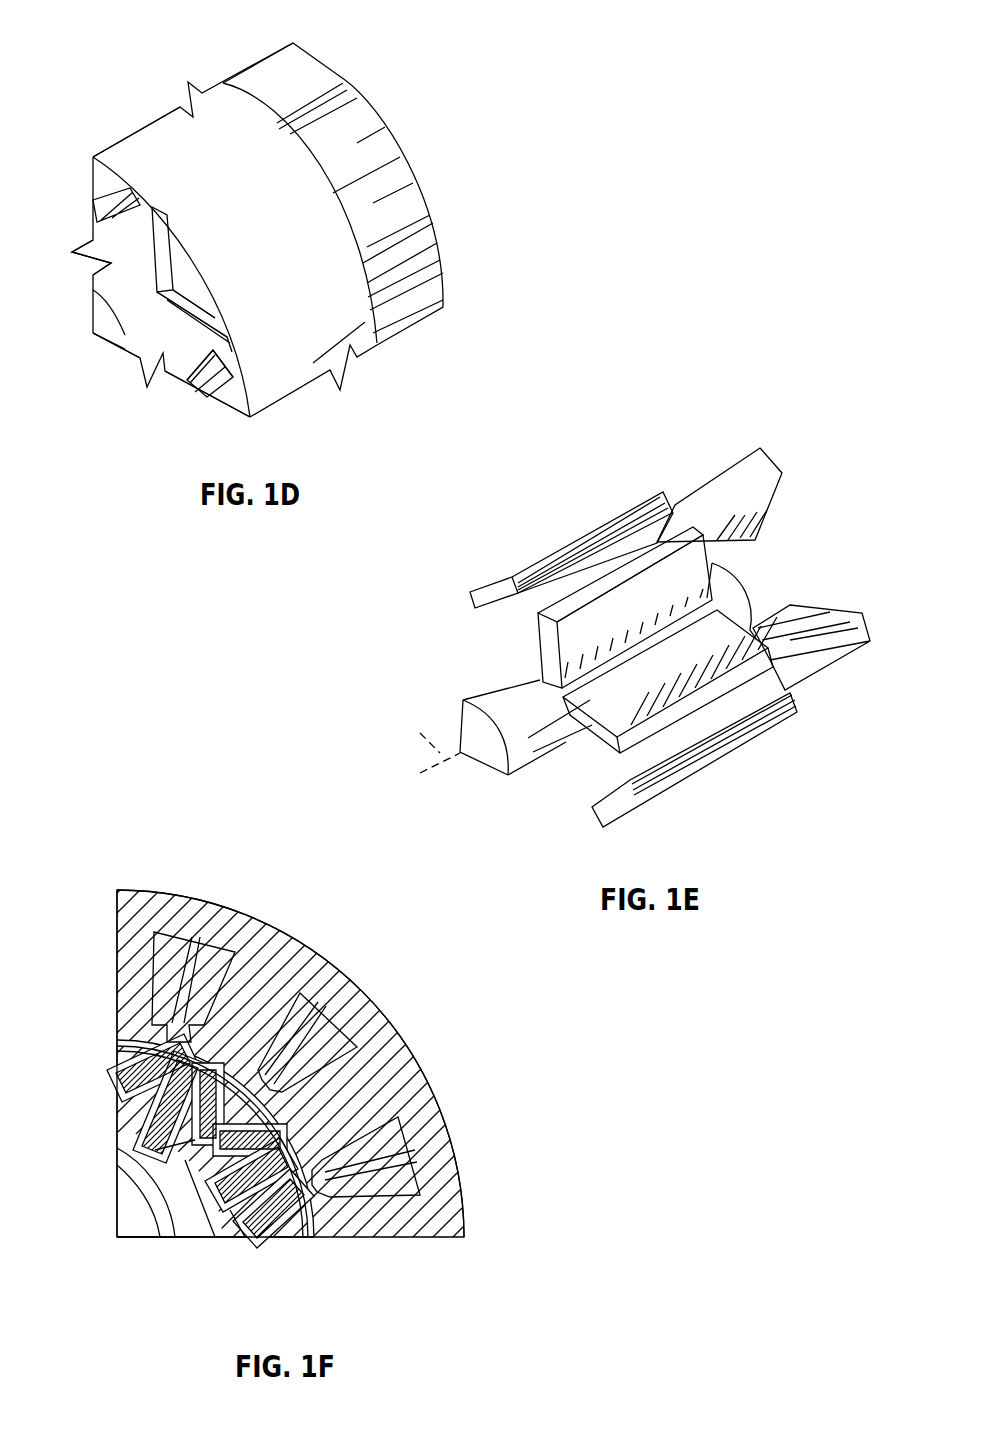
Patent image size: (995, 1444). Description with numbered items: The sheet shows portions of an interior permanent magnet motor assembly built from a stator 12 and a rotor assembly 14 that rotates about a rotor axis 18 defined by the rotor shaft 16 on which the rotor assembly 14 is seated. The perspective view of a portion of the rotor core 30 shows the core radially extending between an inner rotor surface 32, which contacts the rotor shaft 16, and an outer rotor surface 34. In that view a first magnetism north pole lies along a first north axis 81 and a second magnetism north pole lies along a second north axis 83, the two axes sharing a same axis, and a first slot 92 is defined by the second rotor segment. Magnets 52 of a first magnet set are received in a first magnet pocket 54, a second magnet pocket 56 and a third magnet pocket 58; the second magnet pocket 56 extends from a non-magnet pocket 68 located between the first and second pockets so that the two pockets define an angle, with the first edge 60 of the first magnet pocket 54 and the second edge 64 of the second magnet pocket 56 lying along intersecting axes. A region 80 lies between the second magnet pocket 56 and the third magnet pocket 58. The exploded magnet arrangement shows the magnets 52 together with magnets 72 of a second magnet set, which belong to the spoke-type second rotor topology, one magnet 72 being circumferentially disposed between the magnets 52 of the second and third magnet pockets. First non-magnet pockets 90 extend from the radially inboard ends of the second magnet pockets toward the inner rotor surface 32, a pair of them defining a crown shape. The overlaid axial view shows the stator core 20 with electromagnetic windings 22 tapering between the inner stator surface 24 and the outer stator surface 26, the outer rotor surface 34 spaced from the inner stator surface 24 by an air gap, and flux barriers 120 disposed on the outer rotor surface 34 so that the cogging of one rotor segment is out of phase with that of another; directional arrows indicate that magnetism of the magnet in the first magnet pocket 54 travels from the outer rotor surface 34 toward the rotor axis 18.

In FIG. 1F, the stator 12 is at (162, 882).
In FIG. 1D, the rotor assembly 14 is at (195, 55).
In FIG. 1F, the rotor assembly 14 is at (175, 1297).
In FIG. 1D, the rotor shaft 16 is at (105, 322).
In FIG. 1E, the rotor shaft 16 is at (505, 780).
In FIG. 1F, the rotor shaft 16 is at (132, 1210).
In FIG. 1D, the rotor axis 18 is at (93, 333).
In FIG. 1E, the rotor axis 18 is at (436, 737).
In FIG. 1F, the rotor axis 18 is at (117, 1238).
In FIG. 1F, the stator core 20 is at (410, 1220).
In FIG. 1F, the electromagnetic windings 22 is at (345, 1007).
In FIG. 1F, the inner stator surface 24 is at (333, 1215).
In FIG. 1F, the outer stator surface 26 is at (453, 1173).
In FIG. 1F, the rotor core 30 is at (130, 1178).
In FIG. 1D, the inner rotor surface 32 is at (118, 344).
In FIG. 1F, the inner rotor surface 32 is at (170, 1222).
In FIG. 1D, the outer rotor surface 34 is at (150, 148).
In FIG. 1F, the outer rotor surface 34 is at (292, 1238).
In FIG. 1D, the magnet 52 is at (170, 320).
In FIG. 1E, the magnet 52 is at (533, 562).
In FIG. 1D, the first magnet pocket 54 is at (147, 243).
In FIG. 1F, the first magnet pocket 54 is at (122, 1086).
In FIG. 1D, the second magnet pocket 56 is at (182, 320).
In FIG. 1F, the second magnet pocket 56 is at (283, 1088).
In FIG. 1D, the third magnet pocket 58 is at (105, 190).
In FIG. 1F, the first edge 60 is at (170, 1050).
In FIG. 1F, the second edge 64 is at (272, 1224).
In FIG. 1D, the non-magnet pocket 68 is at (163, 217).
In FIG. 1E, the magnet 72 is at (712, 472).
In FIG. 1D, the region 80 is at (203, 350).
In FIG. 1F, the region 80 is at (247, 1085).
In FIG. 1D, the first north axis 81 is at (110, 148).
In FIG. 1D, the second north axis 83 is at (245, 65).
In FIG. 1F, the first non-magnet pockets 90 is at (118, 1153).
In FIG. 1D, the first slot 92 is at (447, 237).
In FIG. 1F, the first slot 92 is at (323, 1122).
In FIG. 1F, the flux barriers 120 is at (245, 1058).